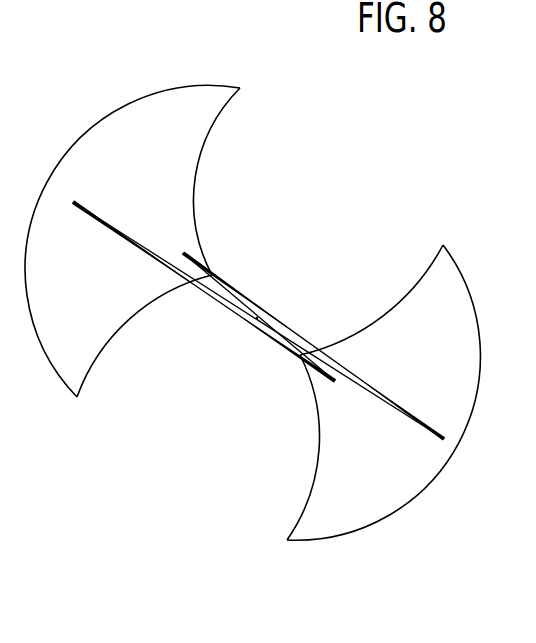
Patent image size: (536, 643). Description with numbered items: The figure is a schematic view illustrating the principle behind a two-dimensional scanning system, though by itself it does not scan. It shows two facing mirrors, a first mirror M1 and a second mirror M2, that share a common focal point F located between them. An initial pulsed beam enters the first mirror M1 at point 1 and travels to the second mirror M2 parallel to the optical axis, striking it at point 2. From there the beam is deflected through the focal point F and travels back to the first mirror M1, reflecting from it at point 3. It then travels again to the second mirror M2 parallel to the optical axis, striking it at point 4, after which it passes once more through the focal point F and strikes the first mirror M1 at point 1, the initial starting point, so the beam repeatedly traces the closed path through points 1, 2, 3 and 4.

The first mirror M1 is at (155, 228).
The second mirror M2 is at (390, 378).
The initial entry point 1 is at (195, 290).
The second strike point 2 is at (264, 332).
The third reflection point 3 is at (305, 332).
The fourth strike point 4 is at (264, 321).
The focal point F is at (257, 318).